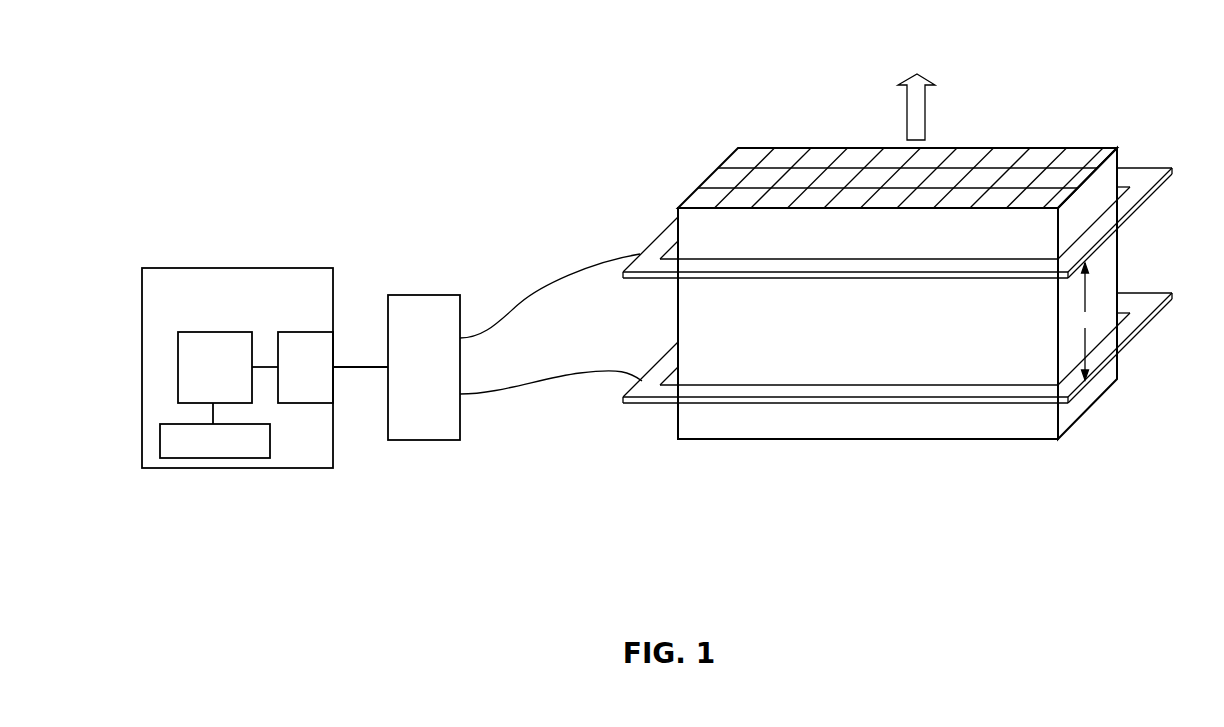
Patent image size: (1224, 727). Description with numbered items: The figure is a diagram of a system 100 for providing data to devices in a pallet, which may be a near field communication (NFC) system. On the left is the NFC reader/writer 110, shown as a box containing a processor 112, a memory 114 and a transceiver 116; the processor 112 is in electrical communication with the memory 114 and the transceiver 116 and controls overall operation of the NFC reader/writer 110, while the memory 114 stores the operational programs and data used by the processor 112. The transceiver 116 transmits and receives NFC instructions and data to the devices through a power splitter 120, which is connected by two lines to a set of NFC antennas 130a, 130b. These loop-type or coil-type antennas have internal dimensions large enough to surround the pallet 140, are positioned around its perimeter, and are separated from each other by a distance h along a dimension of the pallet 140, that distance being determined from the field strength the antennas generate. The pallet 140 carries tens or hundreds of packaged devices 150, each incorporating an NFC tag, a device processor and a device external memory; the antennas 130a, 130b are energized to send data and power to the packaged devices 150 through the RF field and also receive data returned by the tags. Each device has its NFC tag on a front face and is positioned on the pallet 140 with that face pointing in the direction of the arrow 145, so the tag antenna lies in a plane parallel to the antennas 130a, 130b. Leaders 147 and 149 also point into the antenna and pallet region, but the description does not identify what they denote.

The system 100 is at (212, 64).
The NFC reader/writer 110 is at (221, 303).
The processor 112 is at (196, 379).
The memory 114 is at (196, 453).
The transceiver 116 is at (288, 379).
The power splitter 120 is at (407, 379).
The NFC antenna 130a is at (659, 236).
The NFC antenna 130b is at (643, 404).
The pallet 140 is at (897, 259).
The arrow 145 is at (926, 122).
The electric field 147 is at (656, 311).
The field region 149 is at (1137, 268).
The packaged devices 150 is at (806, 128).